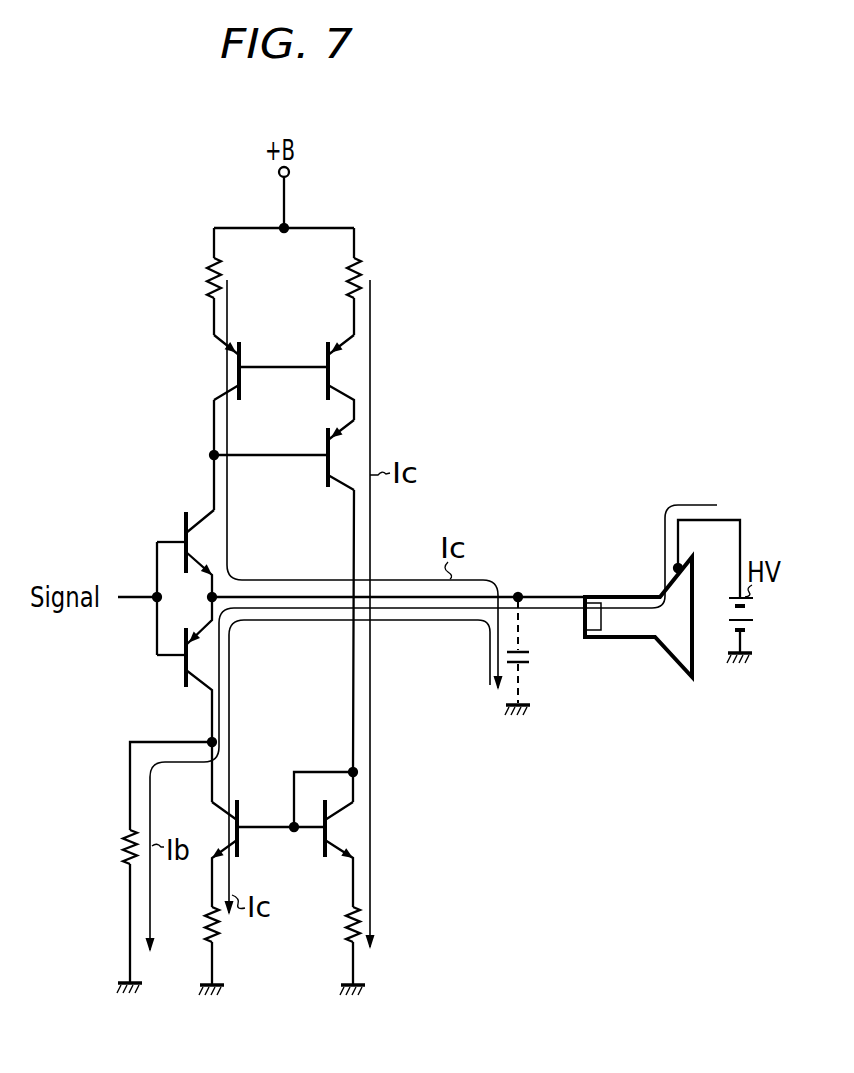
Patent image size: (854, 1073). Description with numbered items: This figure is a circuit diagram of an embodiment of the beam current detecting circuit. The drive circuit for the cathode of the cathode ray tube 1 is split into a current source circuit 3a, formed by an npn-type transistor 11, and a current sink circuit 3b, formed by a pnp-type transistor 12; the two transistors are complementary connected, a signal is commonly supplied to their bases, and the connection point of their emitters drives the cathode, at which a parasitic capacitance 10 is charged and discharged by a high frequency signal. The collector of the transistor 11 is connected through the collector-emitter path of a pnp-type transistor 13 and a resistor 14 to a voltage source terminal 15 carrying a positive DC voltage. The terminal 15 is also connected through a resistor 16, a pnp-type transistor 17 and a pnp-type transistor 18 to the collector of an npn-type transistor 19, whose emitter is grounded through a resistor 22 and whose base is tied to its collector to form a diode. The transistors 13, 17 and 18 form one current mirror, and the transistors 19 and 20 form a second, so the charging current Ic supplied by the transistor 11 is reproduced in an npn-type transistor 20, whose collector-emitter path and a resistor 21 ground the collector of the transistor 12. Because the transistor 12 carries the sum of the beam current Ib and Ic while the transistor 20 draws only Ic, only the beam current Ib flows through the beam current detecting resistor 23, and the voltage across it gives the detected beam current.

The cathode ray tube 1 is at (662, 652).
The current source circuit 3a is at (150, 525).
The current sink circuit 3b is at (130, 715).
The parasitic capacitance 10 is at (528, 668).
The npn-type transistor 11 is at (188, 560).
The pnp-type transistor 12 is at (186, 675).
The pnp-type transistor 13 is at (243, 385).
The resistor 14 is at (206, 292).
The voltage source terminal 15 is at (290, 175).
The resistor 16 is at (346, 292).
The pnp-type transistor 17 is at (322, 388).
The pnp-type transistor 18 is at (322, 477).
The npn-type transistor 19 is at (319, 850).
The npn-type transistor 20 is at (242, 842).
The resistor 21 is at (207, 930).
The resistor 22 is at (345, 930).
The beam current detecting resistor 23 is at (124, 858).